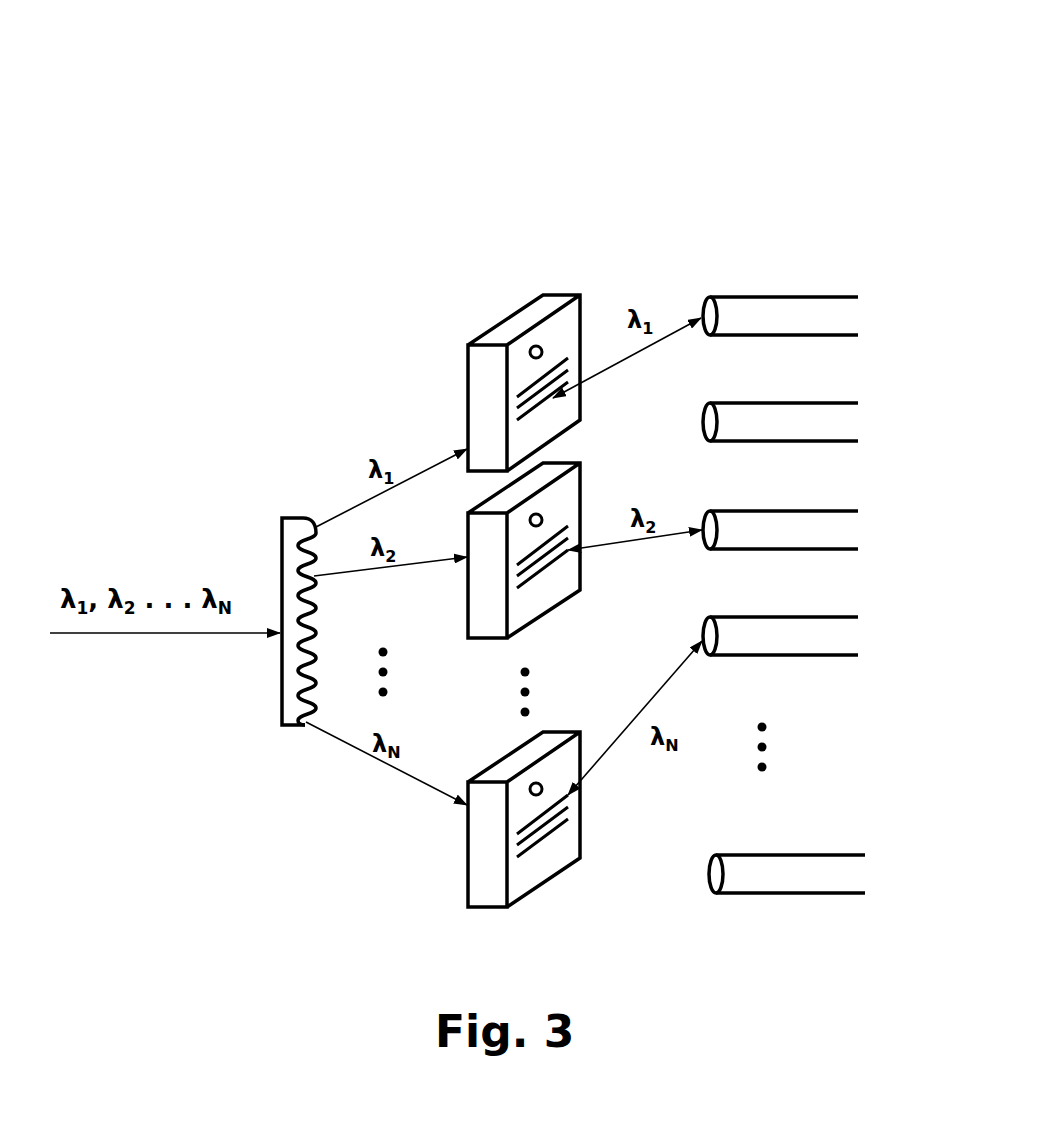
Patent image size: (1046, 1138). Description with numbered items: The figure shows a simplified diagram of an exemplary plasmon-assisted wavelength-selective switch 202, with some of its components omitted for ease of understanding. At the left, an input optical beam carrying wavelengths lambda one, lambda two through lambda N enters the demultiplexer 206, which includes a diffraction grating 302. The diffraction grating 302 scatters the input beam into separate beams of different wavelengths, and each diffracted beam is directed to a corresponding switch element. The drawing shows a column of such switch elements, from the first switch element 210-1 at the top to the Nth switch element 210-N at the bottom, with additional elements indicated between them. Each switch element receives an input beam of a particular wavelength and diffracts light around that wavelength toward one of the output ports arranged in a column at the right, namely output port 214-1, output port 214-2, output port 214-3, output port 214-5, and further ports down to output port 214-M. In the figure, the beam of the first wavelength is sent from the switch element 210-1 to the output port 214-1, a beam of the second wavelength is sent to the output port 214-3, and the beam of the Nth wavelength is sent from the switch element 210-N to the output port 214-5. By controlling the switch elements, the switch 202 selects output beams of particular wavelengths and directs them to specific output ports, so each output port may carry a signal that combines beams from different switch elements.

The PA wavelength-selective switch 202 is at (288, 91).
The demultiplexer 206 is at (295, 516).
The diffraction grating 302 is at (312, 712).
The switch element 210-1 is at (540, 295).
The switch element 210-N is at (558, 732).
The output port 214-1 is at (858, 297).
The output port 214-2 is at (858, 403).
The output port 214-3 is at (858, 511).
The output port 214-5 is at (858, 617).
The output port 214-M is at (865, 855).